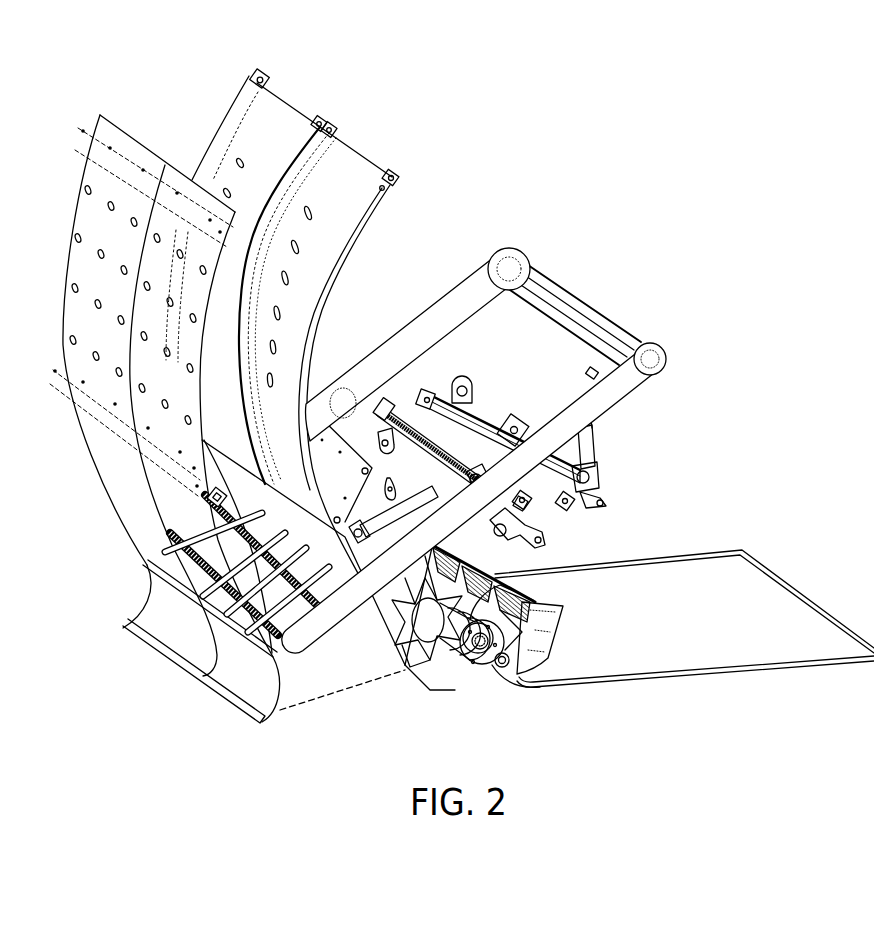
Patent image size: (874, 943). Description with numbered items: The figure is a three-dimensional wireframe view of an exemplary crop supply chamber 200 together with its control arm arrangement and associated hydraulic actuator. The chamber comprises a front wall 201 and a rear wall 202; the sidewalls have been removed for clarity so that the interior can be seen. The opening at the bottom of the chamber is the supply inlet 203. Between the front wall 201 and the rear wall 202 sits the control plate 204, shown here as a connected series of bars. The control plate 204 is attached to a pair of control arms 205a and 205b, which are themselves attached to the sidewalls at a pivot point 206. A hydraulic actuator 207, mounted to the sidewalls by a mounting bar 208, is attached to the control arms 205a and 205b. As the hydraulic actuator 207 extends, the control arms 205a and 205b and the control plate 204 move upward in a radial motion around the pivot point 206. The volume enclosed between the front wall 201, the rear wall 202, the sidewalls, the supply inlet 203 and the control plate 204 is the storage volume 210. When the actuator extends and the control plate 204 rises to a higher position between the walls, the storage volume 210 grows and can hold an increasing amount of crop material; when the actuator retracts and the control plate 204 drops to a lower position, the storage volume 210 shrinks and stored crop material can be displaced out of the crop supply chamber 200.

The crop supply chamber 200 is at (449, 421).
The front wall 201 is at (85, 222).
The rear wall 202 is at (290, 125).
The supply inlet 203 is at (352, 697).
The control plate 204 is at (205, 612).
The control arm 205a is at (418, 327).
The control arm 205b is at (547, 427).
The pivot point 206 is at (666, 376).
The hydraulic actuator 207 is at (590, 443).
The mounting bar 208 is at (460, 548).
The storage volume 210 is at (318, 668).